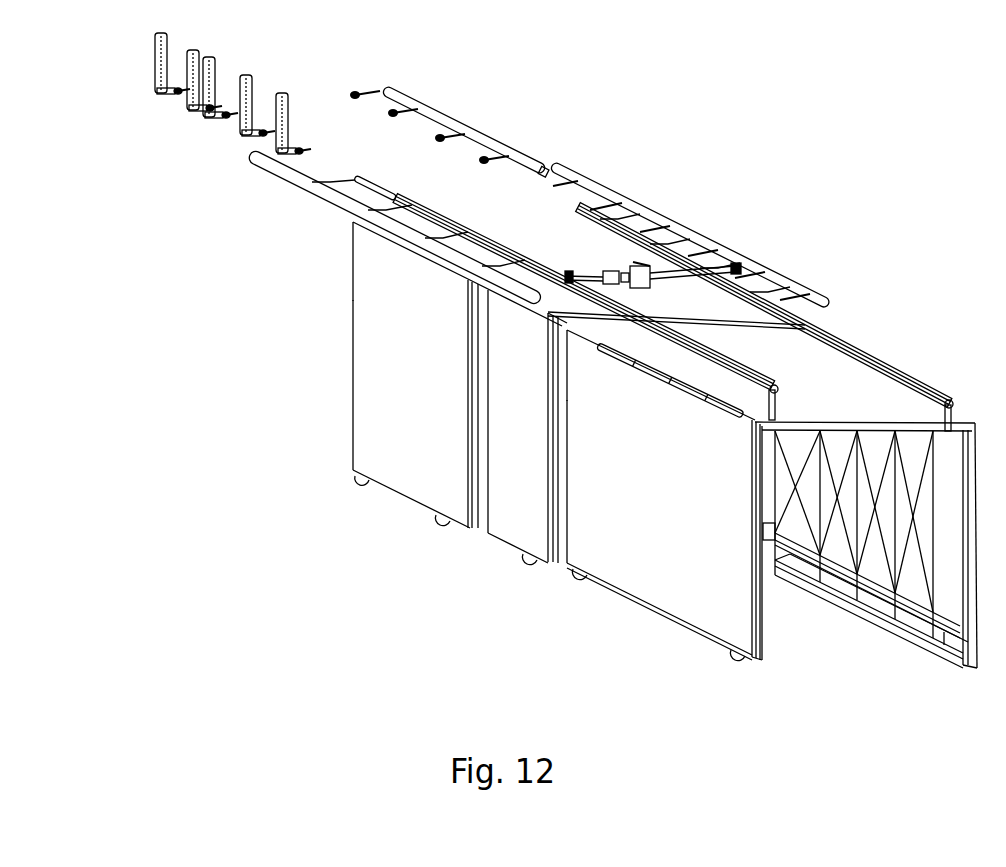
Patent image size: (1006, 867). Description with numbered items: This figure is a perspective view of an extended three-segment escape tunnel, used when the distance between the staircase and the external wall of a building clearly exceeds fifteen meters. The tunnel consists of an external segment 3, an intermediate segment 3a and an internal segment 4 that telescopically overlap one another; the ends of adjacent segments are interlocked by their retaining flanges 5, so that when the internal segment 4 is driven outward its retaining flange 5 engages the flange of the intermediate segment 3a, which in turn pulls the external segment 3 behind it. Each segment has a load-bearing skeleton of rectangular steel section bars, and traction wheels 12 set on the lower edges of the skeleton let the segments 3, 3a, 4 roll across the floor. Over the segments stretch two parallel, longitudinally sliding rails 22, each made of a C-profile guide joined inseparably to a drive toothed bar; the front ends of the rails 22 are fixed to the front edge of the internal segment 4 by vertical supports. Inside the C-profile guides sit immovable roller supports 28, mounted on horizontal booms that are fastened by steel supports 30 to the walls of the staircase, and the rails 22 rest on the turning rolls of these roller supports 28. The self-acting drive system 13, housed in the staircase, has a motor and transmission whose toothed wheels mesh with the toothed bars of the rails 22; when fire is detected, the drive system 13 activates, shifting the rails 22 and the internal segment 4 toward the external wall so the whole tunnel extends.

The steel support 30 is at (250, 125).
The roller support 28 is at (353, 181).
The sliding rail 22 is at (830, 307).
The drive system 13 is at (622, 270).
The retaining flange 5 is at (728, 272).
The external segment 3 is at (352, 446).
The intermediate segment 3a is at (490, 540).
The traction wheel 12 is at (560, 567).
The internal segment 4 is at (640, 605).